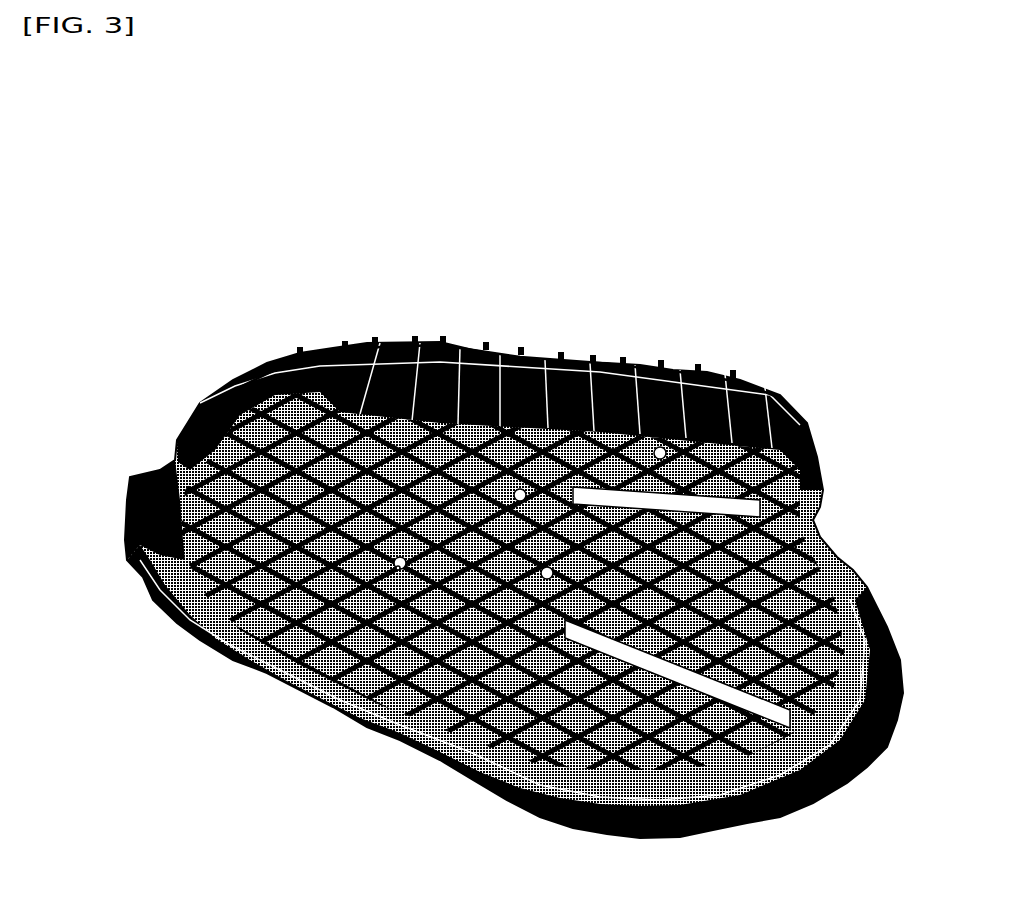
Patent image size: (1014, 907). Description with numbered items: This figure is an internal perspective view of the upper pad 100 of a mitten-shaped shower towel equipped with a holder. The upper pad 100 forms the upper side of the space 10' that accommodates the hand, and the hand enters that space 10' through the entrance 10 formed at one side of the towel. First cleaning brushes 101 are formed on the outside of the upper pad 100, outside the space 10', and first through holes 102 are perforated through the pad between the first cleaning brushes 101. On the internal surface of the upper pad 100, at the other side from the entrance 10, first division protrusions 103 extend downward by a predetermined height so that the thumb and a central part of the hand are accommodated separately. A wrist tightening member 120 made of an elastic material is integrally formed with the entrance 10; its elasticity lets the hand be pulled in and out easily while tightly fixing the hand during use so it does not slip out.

The upper pad 100 is at (822, 385).
The entrance 10 is at (512, 590).
The space 10' is at (525, 453).
The first cleaning brushes 101 is at (303, 355).
The first through holes 102 is at (504, 629).
The first division protrusions 103 is at (642, 520).
The wrist tightening member 120 is at (260, 367).